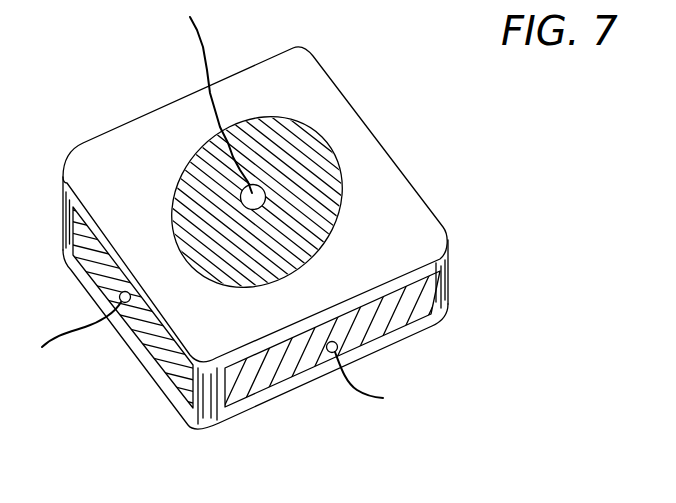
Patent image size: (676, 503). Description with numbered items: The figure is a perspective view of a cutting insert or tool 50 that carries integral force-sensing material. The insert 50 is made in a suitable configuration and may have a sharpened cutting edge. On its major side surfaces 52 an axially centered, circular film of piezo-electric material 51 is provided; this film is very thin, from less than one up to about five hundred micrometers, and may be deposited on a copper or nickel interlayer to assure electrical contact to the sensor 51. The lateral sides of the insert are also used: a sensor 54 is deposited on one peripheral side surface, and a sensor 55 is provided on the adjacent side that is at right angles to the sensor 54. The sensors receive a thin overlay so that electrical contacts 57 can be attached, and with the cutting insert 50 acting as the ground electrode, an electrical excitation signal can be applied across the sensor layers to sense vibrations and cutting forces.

The cutting insert 50 is at (317, 92).
The film of piezo-electric material 51 is at (193, 172).
The major side surfaces 52 is at (355, 140).
The sensor 54 is at (143, 333).
The sensor 55 is at (407, 320).
The electrical contacts 57 is at (266, 194).